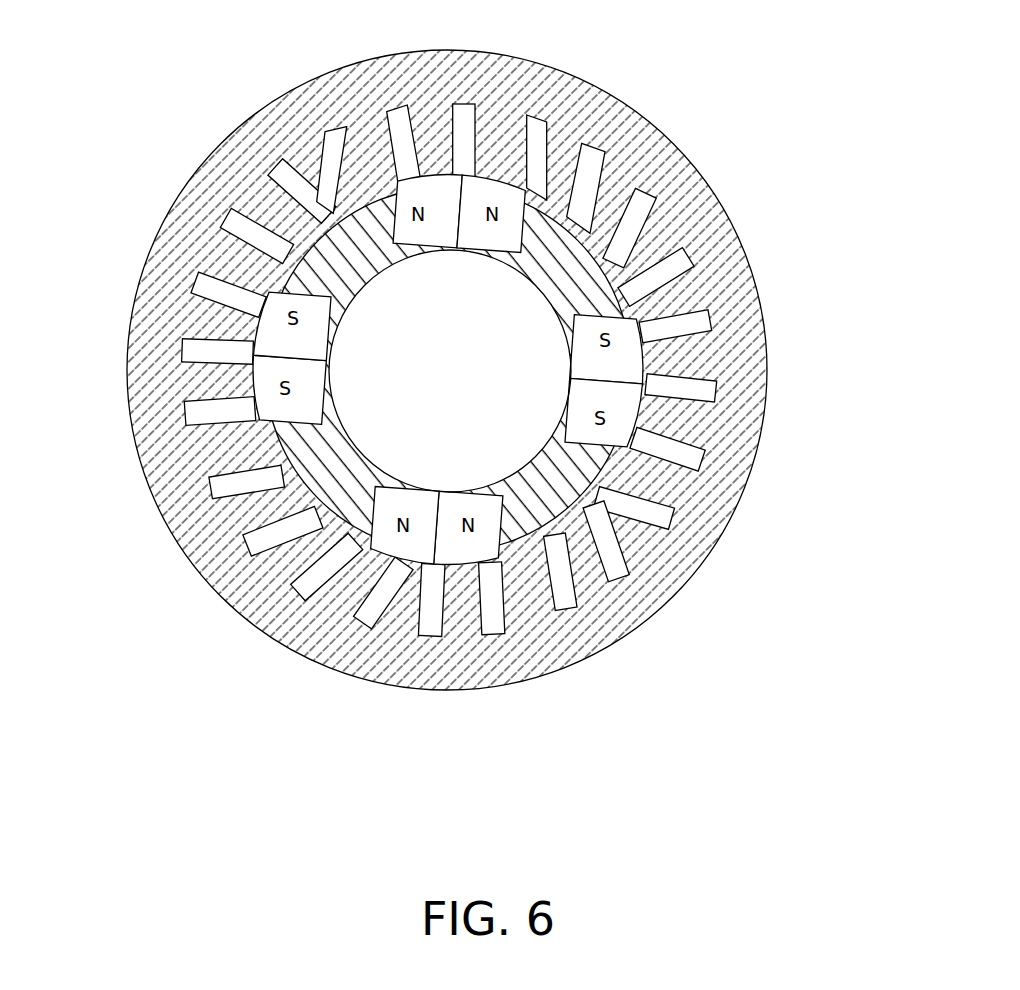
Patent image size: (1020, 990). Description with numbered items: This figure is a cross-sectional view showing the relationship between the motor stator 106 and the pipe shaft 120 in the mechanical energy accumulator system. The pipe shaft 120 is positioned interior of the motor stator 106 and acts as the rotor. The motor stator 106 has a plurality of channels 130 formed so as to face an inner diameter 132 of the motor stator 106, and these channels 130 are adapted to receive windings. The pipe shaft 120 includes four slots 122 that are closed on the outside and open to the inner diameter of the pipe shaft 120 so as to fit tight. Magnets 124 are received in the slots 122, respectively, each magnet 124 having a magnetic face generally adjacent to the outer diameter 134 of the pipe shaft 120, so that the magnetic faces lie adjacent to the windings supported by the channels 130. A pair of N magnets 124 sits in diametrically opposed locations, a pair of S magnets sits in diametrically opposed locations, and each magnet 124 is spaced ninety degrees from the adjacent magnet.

The motor stator 106 is at (745, 332).
The pipe shaft 120 is at (447, 384).
The slots 122 is at (505, 260).
The magnets 124 is at (270, 340).
The channels 130 is at (542, 110).
The inner diameter 132 is at (508, 560).
The outer diameter 134 is at (617, 255).